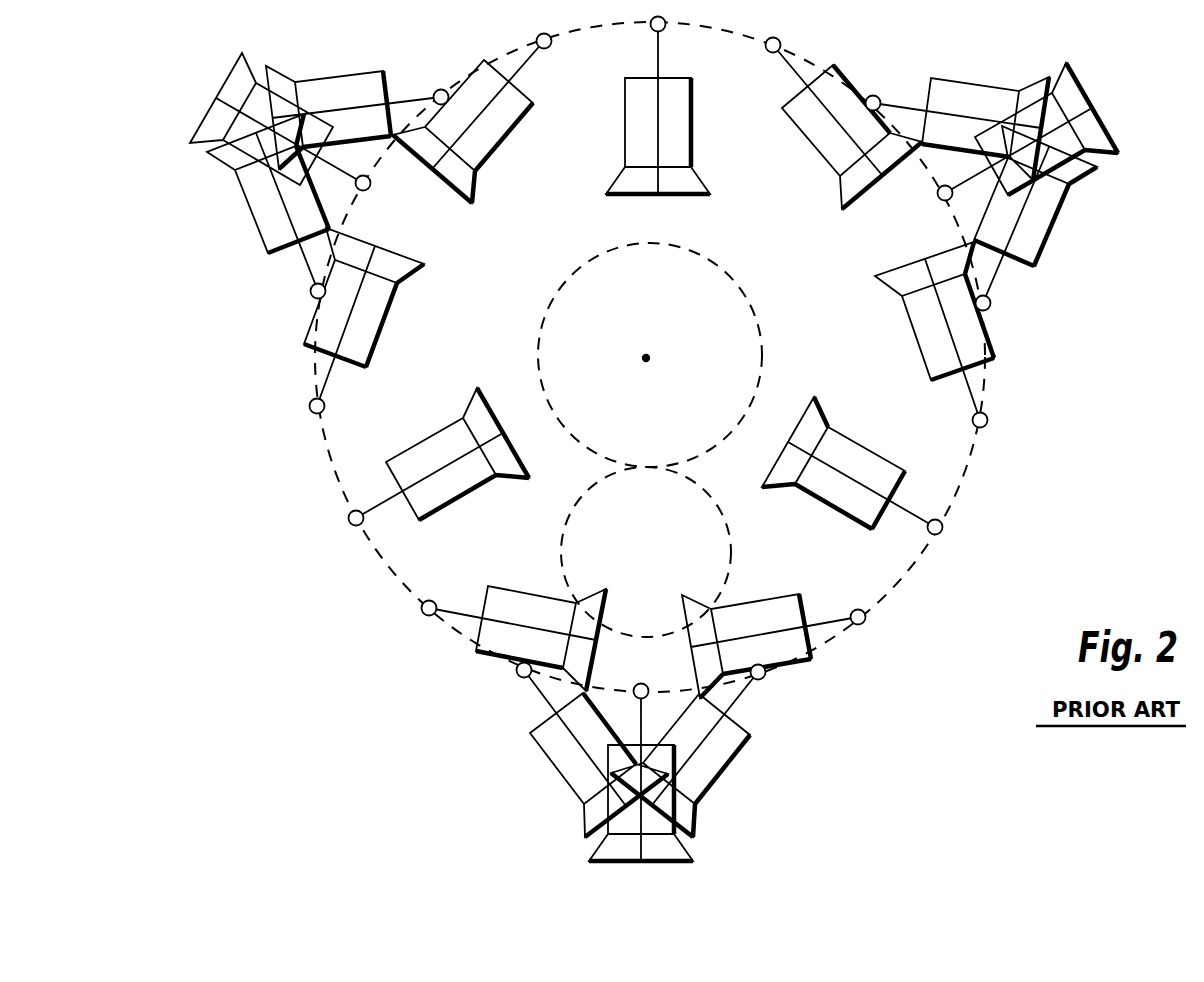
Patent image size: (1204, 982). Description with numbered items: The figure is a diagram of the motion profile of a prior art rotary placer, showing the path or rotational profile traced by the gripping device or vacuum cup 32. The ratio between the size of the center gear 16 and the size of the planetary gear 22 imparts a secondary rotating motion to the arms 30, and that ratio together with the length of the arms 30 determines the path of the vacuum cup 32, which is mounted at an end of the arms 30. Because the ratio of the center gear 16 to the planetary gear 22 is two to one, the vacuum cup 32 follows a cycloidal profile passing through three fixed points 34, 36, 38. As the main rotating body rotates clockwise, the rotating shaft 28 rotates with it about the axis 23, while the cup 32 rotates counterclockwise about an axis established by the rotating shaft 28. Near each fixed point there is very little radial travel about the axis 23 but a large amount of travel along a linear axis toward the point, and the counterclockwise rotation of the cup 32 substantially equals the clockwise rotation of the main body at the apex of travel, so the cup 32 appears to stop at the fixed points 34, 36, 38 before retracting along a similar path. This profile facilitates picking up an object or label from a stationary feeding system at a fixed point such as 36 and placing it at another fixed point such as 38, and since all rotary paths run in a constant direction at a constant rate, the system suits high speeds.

The center gear 16 is at (563, 288).
The planetary gear 22 is at (652, 668).
The axis 23 is at (646, 358).
The rotating shaft 28 is at (666, 27).
The arms 30 is at (658, 63).
The vacuum cup 32 is at (693, 96).
The fixed point 34 is at (205, 93).
The fixed point 36 is at (1105, 110).
The fixed point 38 is at (640, 872).